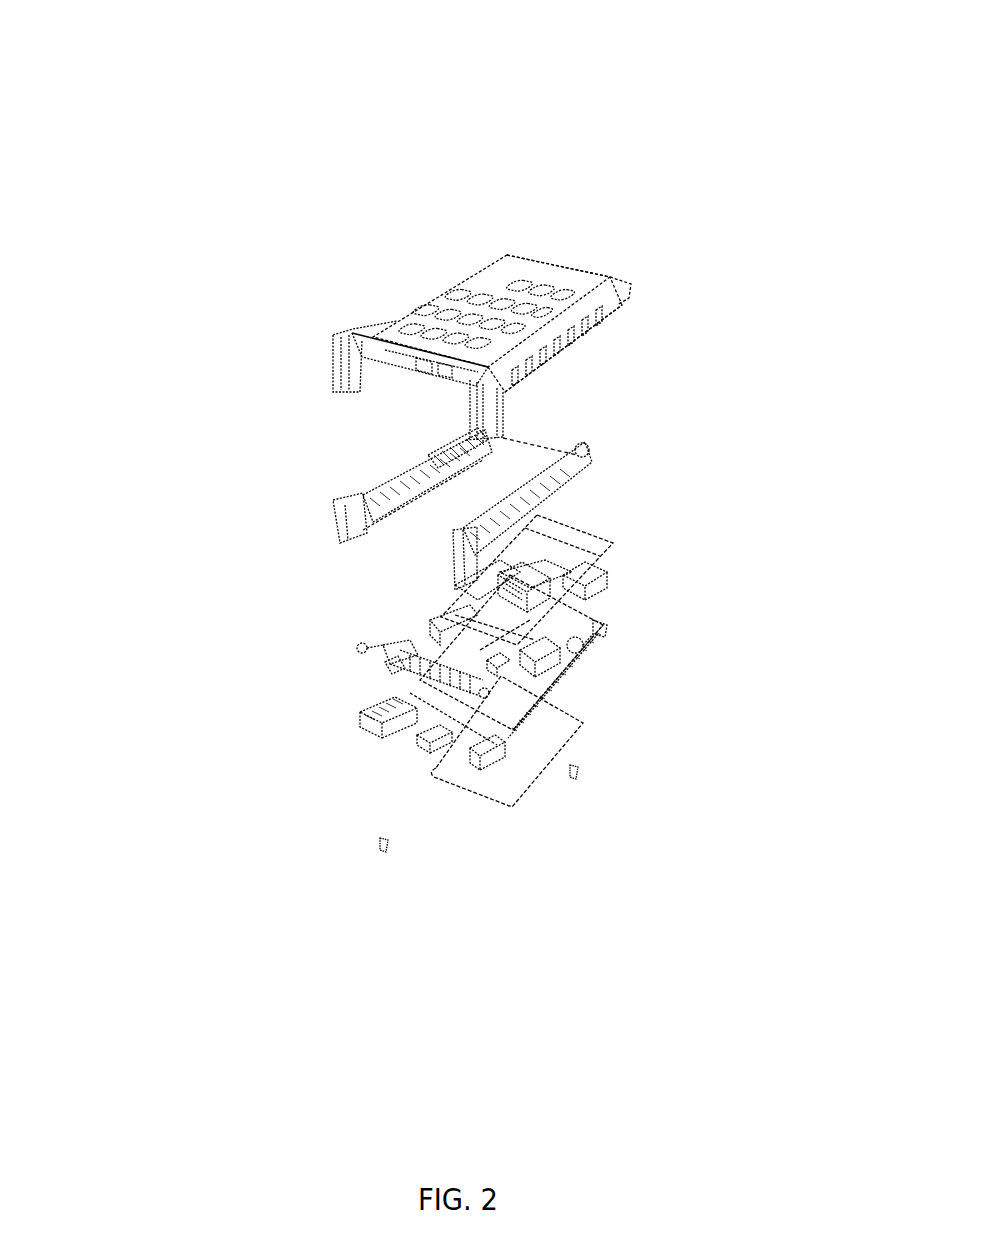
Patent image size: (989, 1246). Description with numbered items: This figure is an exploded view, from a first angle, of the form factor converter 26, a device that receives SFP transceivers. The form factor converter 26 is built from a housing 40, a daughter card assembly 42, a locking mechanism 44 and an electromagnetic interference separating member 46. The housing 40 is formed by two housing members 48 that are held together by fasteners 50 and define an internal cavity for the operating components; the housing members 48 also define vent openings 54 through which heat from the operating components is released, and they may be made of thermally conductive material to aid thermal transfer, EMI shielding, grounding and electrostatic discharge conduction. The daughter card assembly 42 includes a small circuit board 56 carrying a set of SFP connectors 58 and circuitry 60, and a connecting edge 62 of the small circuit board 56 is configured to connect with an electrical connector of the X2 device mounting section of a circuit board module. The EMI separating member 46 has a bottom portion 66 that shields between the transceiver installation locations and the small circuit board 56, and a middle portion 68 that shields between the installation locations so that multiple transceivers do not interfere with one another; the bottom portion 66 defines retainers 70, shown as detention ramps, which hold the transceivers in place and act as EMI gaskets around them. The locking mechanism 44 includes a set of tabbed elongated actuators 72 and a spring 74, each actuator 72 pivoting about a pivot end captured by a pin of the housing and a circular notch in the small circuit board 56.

The form factor converter 26 is at (63, 86).
The housing 40 is at (308, 246).
The vent openings 54 is at (455, 292).
The housing members 48 is at (628, 206).
The locking mechanism 44 is at (598, 389).
The spring 74 is at (536, 431).
The actuators 72 is at (318, 449).
The daughter card assembly 42 is at (646, 481).
The connecting edge 62 is at (539, 519).
The SFP connectors 58 is at (677, 526).
The circuitry 60 is at (572, 561).
The small circuit board 56 is at (648, 582).
The EMI separating member 46 is at (313, 611).
The bottom portion 66 is at (393, 640).
The middle portion 68 is at (443, 621).
The retainers 70 is at (395, 661).
The fasteners 50 is at (585, 805).